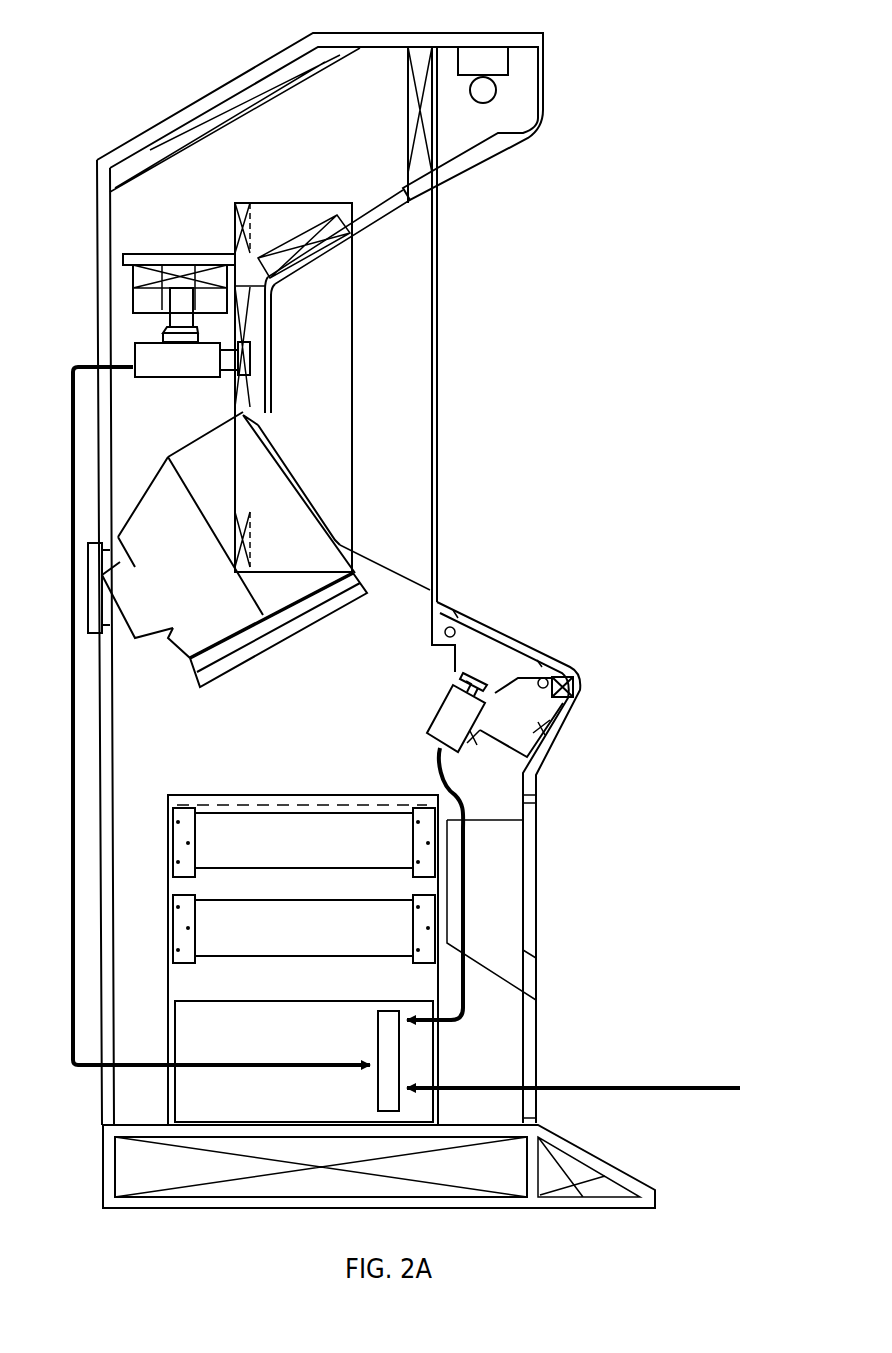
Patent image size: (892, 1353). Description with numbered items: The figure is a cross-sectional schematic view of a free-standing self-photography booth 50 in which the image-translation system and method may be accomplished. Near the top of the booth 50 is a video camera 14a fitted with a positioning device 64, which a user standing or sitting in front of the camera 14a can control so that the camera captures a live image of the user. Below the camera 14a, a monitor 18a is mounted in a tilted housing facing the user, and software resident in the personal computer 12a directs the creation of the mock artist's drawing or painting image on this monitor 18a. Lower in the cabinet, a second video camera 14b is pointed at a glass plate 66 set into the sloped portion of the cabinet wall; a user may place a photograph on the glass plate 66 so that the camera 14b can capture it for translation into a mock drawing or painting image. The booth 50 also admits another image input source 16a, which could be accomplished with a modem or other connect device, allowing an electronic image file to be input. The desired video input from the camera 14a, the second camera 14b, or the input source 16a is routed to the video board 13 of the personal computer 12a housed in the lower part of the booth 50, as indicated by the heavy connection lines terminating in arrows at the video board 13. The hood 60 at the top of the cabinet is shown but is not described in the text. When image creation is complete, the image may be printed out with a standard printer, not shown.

The booth 50 is at (580, 56).
The top hood / shroud 60 is at (487, 33).
The positioning device 64 is at (162, 253).
The video camera 14a is at (133, 345).
The monitor 18a is at (195, 559).
The second video camera 14b is at (433, 713).
The glass plate 66 is at (540, 662).
The personal computer 12a is at (277, 1100).
The video board 13 is at (389, 1111).
The image input source 16a is at (685, 1087).